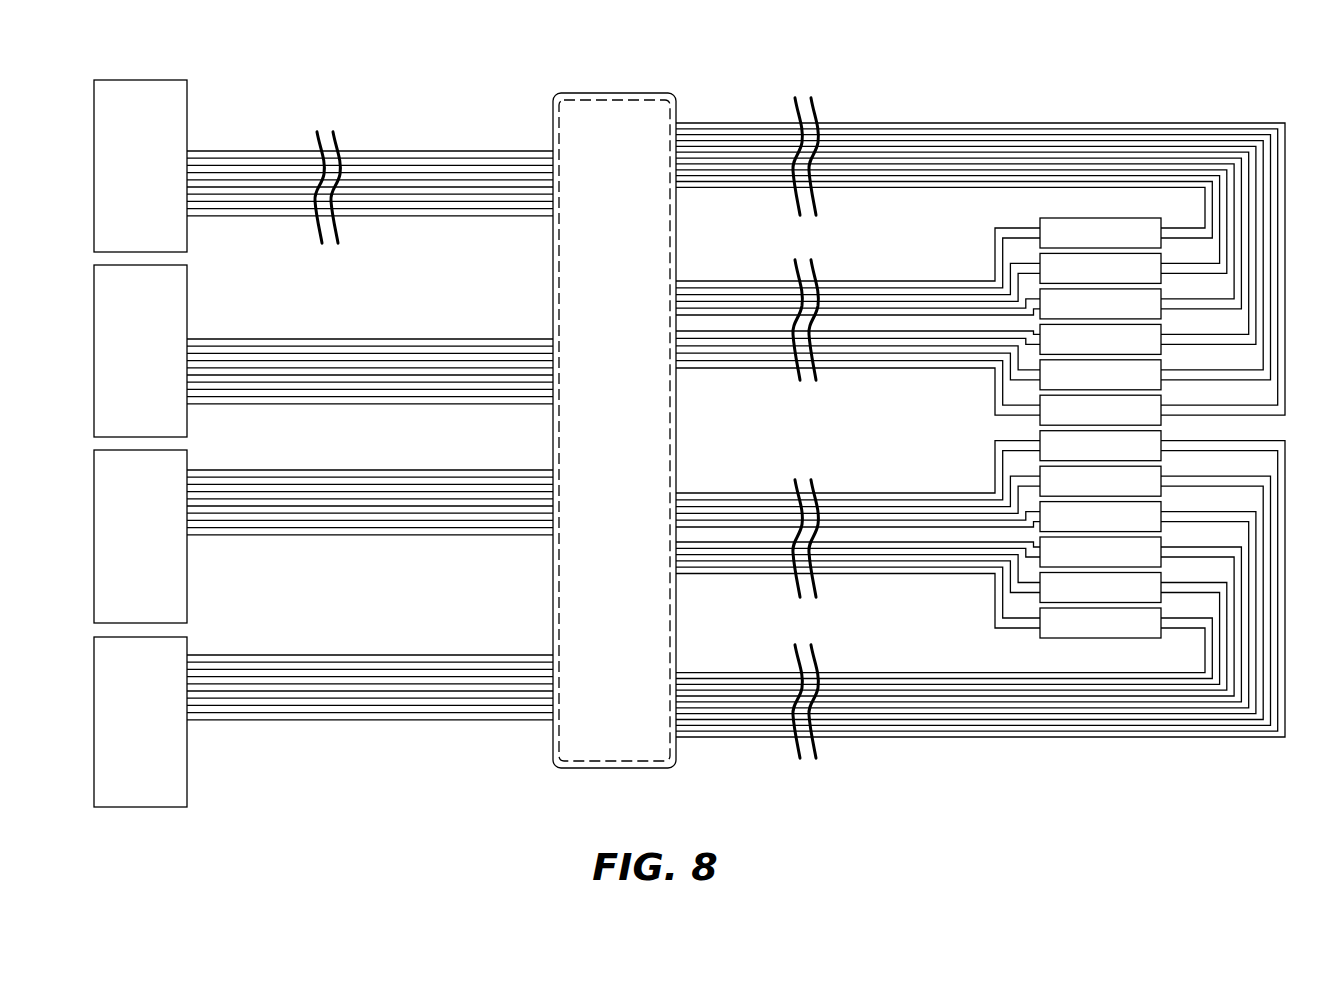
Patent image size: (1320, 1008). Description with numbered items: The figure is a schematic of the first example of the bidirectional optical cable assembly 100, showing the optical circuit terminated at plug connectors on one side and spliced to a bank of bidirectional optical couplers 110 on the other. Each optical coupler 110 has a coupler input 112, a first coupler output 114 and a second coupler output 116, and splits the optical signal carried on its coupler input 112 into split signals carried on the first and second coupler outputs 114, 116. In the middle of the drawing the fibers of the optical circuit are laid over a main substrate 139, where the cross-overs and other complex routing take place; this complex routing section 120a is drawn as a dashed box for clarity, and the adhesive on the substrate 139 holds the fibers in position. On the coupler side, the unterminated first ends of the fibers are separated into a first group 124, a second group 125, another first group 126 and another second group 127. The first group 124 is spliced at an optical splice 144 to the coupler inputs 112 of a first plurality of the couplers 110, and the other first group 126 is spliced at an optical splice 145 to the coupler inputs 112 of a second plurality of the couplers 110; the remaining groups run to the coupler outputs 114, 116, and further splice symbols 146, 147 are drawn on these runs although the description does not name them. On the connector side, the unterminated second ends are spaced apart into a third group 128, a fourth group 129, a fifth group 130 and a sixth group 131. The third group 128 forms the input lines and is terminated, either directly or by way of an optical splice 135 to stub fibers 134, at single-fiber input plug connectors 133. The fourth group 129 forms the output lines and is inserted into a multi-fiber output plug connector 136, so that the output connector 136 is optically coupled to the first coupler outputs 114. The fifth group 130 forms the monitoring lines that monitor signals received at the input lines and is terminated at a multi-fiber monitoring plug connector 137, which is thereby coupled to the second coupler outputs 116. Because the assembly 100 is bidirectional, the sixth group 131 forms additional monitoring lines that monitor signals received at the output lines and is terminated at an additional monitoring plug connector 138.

The optical cable assembly 100 is at (1208, 80).
The optical coupler 110 is at (1084, 242).
The coupler input 112 is at (858, 426).
The first coupler output 114 is at (980, 413).
The second coupler output 116 is at (980, 413).
The complex routing section 120a is at (650, 96).
The first group 124 is at (795, 283).
The second group 125 is at (795, 118).
The another first group 126 is at (795, 490).
The another second group 127 is at (795, 665).
The third group 128 is at (188, 656).
The fourth group 129 is at (365, 191).
The fifth group 130 is at (188, 338).
The sixth group 131 is at (188, 470).
The input plug connector 133 is at (121, 733).
The stub fibers 134 is at (253, 150).
The optical splice 135 is at (340, 246).
The output plug connector 136 is at (121, 173).
The monitoring plug connector 137 is at (121, 359).
The additional monitoring plug connector 138 is at (121, 544).
The main substrate 139 is at (594, 446).
The optical splice 144 is at (818, 268).
The optical splice 145 is at (818, 104).
The break 146 is at (818, 482).
The break 147 is at (818, 658).